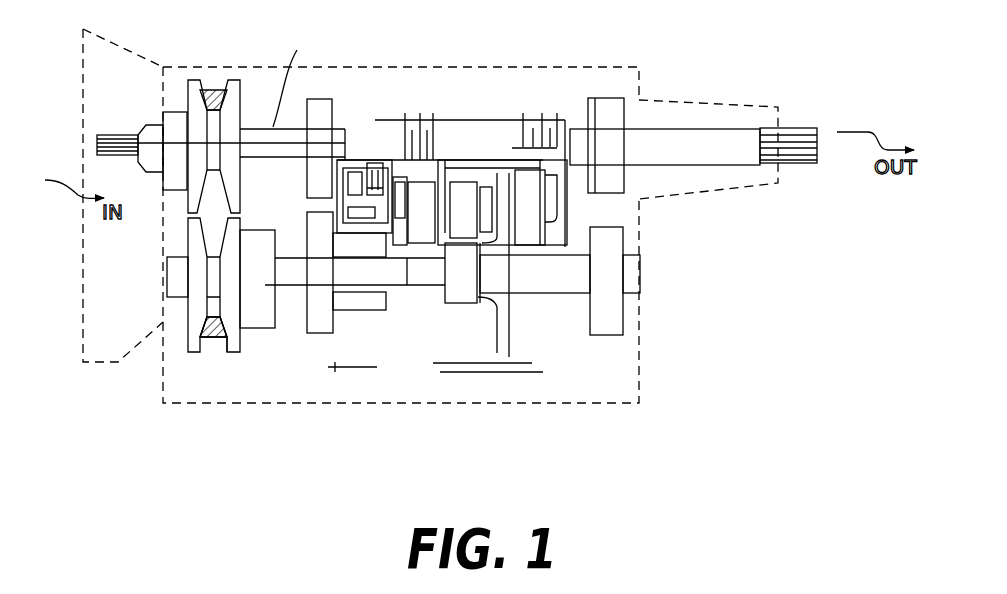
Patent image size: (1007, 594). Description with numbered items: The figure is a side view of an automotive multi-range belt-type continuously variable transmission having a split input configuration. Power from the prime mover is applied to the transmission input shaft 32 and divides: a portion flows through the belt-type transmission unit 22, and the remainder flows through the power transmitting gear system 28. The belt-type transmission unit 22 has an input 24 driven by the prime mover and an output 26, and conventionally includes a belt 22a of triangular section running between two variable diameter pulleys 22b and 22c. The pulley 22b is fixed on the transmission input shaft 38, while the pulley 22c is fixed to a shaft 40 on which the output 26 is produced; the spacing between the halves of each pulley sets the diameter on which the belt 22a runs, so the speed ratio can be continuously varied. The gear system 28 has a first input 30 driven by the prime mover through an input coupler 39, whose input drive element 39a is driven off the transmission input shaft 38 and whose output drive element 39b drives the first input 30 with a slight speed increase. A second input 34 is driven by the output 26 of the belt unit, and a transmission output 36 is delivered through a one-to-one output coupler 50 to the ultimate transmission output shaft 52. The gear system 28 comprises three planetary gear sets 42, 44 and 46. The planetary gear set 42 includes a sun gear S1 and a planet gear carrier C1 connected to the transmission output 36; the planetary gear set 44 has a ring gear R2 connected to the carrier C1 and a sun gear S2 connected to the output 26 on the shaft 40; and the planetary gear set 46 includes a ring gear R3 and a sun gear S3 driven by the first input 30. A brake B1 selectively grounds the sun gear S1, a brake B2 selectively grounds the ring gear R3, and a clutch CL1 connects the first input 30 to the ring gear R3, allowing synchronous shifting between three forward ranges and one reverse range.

The belt-type transmission unit 22 is at (495, 48).
The belt 22a is at (220, 88).
The variable diameter pulley 22b is at (246, 165).
The variable diameter pulley 22c is at (186, 328).
The input 24 is at (107, 134).
The output 26 is at (277, 296).
The power transmitting gear system 28 is at (474, 390).
The first input 30 is at (345, 143).
The transmission input shaft 32 is at (97, 138).
The second input 34 is at (305, 318).
The transmission output 36 is at (567, 295).
The transmission input shaft 38 is at (287, 126).
The input coupler 39 is at (326, 91).
The input drive element 39a is at (305, 177).
The output drive element 39b is at (329, 333).
The shaft 40 is at (293, 287).
The planetary gear set 42 is at (547, 255).
The planetary gear set 44 is at (447, 307).
The planetary gear set 46 is at (407, 288).
The output coupler 50 is at (683, 45).
The ultimate transmission output shaft 52 is at (733, 128).
The brake B1 is at (535, 116).
The brake B2 is at (419, 122).
The clutch CL1 is at (370, 180).
The planet gear carrier C1 is at (498, 250).
The ring gear R2 is at (502, 183).
The ring gear R3 is at (423, 175).
The sun gear S1 is at (532, 240).
The sun gear S2 is at (462, 242).
The sun gear S3 is at (415, 247).